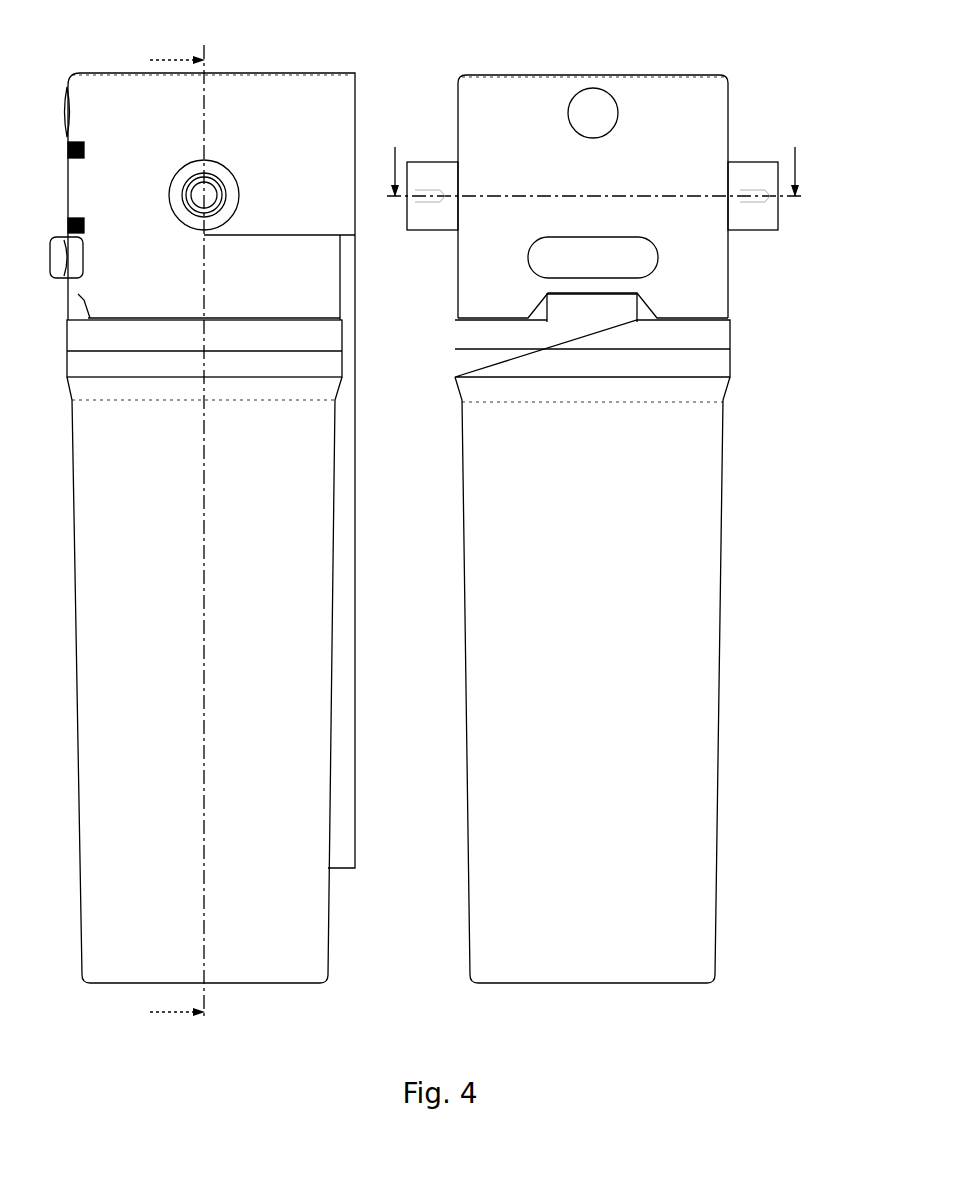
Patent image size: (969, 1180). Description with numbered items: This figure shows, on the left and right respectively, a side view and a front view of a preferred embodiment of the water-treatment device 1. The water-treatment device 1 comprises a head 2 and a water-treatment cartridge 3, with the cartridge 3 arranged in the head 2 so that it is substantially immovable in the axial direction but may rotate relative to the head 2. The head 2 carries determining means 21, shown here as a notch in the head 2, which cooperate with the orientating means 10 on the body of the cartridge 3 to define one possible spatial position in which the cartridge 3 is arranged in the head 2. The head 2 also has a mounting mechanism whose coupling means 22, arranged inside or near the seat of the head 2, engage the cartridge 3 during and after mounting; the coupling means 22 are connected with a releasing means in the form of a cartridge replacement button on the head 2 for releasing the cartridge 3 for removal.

The water-treatment device 1 is at (800, 50).
The head 2 is at (343, 108).
The water-treatment cartridge 3 is at (495, 935).
The orientating means 10 is at (620, 312).
The determining means 21 is at (652, 302).
The coupling means 22 is at (630, 258).